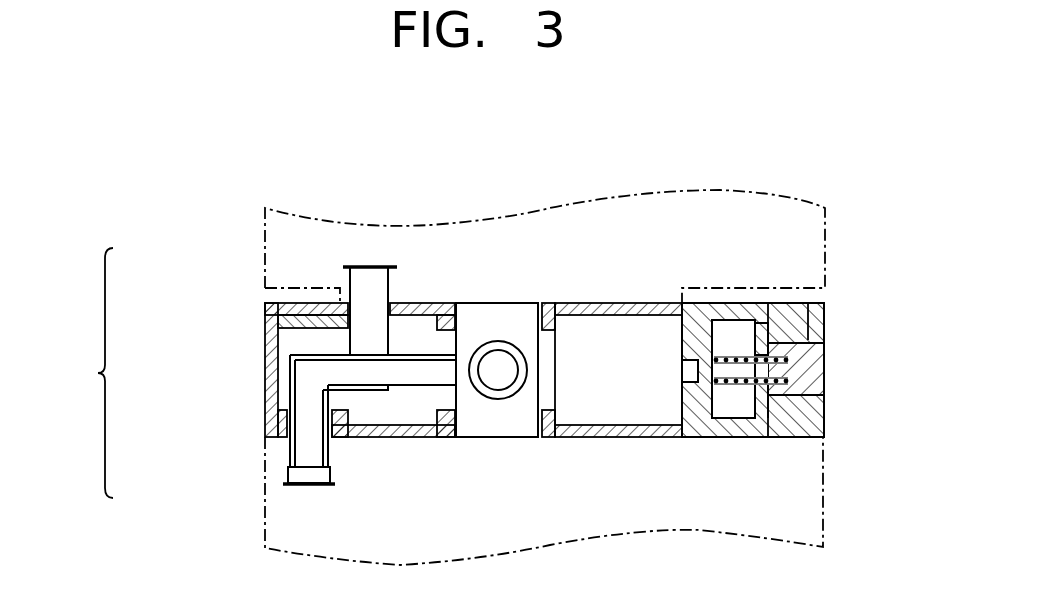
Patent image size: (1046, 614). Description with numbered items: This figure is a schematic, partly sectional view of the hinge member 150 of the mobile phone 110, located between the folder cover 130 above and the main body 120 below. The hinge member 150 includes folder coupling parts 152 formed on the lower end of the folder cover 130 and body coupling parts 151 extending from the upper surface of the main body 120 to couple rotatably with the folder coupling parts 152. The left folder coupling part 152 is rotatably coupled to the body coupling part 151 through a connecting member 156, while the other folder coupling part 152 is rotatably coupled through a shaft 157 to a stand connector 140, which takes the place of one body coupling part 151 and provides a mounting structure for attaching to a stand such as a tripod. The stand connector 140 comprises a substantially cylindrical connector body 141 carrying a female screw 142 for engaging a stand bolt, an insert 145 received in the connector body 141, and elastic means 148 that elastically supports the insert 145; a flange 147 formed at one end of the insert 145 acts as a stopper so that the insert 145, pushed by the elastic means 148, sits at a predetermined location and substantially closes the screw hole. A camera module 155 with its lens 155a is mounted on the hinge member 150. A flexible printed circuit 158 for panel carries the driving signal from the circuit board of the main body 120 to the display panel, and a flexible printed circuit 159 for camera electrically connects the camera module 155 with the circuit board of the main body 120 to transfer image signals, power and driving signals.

The mobile phone 110 is at (82, 373).
The main body 120 is at (267, 500).
The folder cover 130 is at (267, 244).
The stand connector 140 is at (788, 364).
The connector body 141 is at (798, 437).
The female screw 142 is at (805, 335).
The insert 145 is at (827, 375).
The flange 147 is at (768, 323).
The elastic means 148 is at (727, 386).
The hinge member 150 is at (250, 327).
The body coupling part 151 is at (265, 364).
The folder coupling part 152 is at (410, 437).
The camera module 155 is at (477, 303).
The lens 155a is at (510, 343).
The connecting member 156 is at (268, 415).
The shaft 157 is at (697, 363).
The flexible printed circuit for panel 158 is at (370, 275).
The flexible printed circuit for camera 159 is at (310, 486).